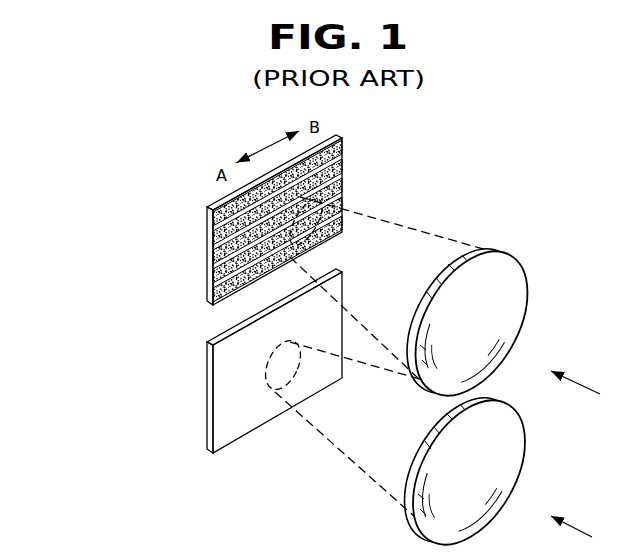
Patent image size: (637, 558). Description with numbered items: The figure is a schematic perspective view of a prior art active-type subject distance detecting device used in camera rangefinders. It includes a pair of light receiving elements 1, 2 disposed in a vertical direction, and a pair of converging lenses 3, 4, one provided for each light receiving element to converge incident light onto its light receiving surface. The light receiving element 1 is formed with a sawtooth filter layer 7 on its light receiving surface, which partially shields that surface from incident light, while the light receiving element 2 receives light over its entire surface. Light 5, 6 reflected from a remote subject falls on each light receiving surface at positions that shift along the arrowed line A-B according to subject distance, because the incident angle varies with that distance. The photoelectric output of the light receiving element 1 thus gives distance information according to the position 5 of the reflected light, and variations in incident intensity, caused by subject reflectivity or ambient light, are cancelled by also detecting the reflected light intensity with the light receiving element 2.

The light receiving element 1 is at (207, 253).
The light receiving element 2 is at (207, 397).
The converging lens 3 is at (528, 298).
The converging lens 4 is at (526, 452).
The light 5 is at (322, 207).
The light 6 is at (267, 392).
The sawtooth filter layer 7 is at (212, 210).